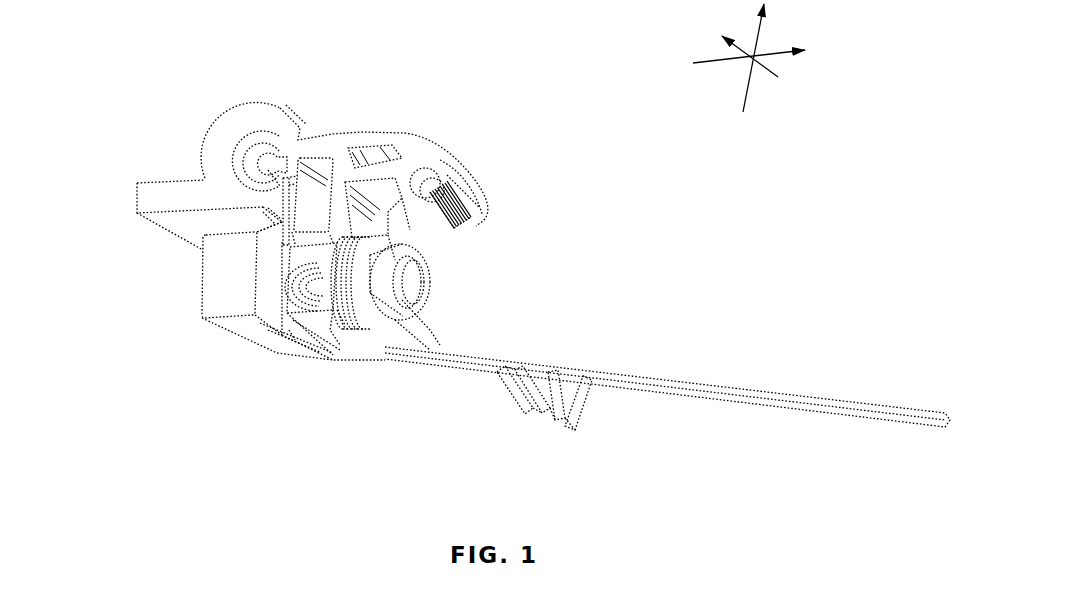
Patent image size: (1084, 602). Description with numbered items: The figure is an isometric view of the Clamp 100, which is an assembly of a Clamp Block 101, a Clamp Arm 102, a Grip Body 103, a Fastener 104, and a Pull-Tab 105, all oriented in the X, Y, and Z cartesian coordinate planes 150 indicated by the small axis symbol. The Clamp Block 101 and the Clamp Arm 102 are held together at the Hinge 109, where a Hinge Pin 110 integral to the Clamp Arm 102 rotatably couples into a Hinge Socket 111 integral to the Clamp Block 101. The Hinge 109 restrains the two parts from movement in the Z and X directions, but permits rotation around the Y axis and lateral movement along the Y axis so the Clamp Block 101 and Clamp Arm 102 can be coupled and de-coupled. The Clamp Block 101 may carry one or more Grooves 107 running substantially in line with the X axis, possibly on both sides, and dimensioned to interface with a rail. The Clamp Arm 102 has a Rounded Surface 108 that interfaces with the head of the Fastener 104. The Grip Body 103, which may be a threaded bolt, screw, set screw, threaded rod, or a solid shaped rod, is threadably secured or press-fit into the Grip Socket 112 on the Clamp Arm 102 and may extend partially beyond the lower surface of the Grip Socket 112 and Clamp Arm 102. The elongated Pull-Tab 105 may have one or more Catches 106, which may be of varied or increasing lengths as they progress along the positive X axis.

The Clamp 100 is at (501, 270).
The Clamp Block 101 is at (230, 296).
The Clamp Arm 102 is at (380, 131).
The Grip Body 103 is at (555, 231).
The Fastener 104 is at (412, 292).
The Pull-Tab 105 is at (430, 367).
The Catches 106 is at (574, 430).
The Grooves 107 is at (227, 226).
The Rounded Surface 108 is at (347, 310).
The Hinge 109 is at (220, 176).
The Hinge Pin 110 is at (281, 150).
The Hinge Socket 111 is at (234, 136).
The Grip Socket 112 is at (412, 177).
The cartesian coordinate planes 150 is at (761, 63).